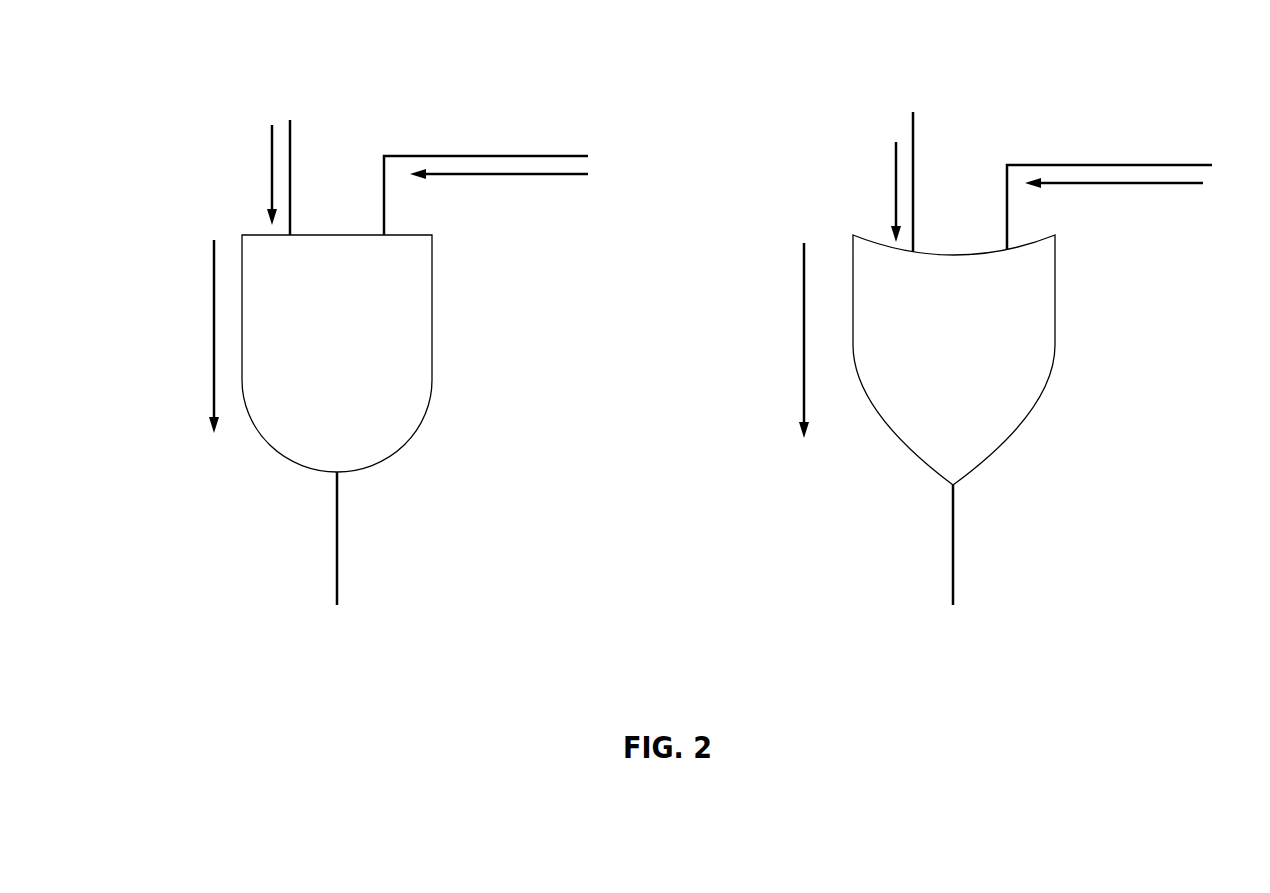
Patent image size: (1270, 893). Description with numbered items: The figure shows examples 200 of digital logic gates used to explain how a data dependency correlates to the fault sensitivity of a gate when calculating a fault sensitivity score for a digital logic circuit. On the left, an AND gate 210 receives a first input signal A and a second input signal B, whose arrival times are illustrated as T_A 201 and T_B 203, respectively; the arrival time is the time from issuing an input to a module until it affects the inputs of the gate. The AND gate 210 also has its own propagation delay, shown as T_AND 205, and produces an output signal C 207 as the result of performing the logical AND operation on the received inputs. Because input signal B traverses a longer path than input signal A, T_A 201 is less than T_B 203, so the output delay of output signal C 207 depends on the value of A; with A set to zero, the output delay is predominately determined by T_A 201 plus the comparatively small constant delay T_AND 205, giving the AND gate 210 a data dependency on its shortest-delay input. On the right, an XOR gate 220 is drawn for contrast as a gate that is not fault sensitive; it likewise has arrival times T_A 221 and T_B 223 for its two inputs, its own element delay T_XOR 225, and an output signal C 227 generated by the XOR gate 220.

The examples of digital logic gates 200 is at (182, 69).
The arrival time T_A 201 is at (250, 200).
The arrival time T_B 203 is at (543, 233).
The delay T_AND 205 is at (190, 354).
The output signal C 207 is at (412, 555).
The AND gate 210 is at (432, 365).
The XOR gate 220 is at (1049, 372).
The arrival time T_A 221 is at (875, 215).
The arrival time T_B 223 is at (1167, 253).
The delay T_XOR 225 is at (781, 355).
The output signal C 227 is at (1029, 568).